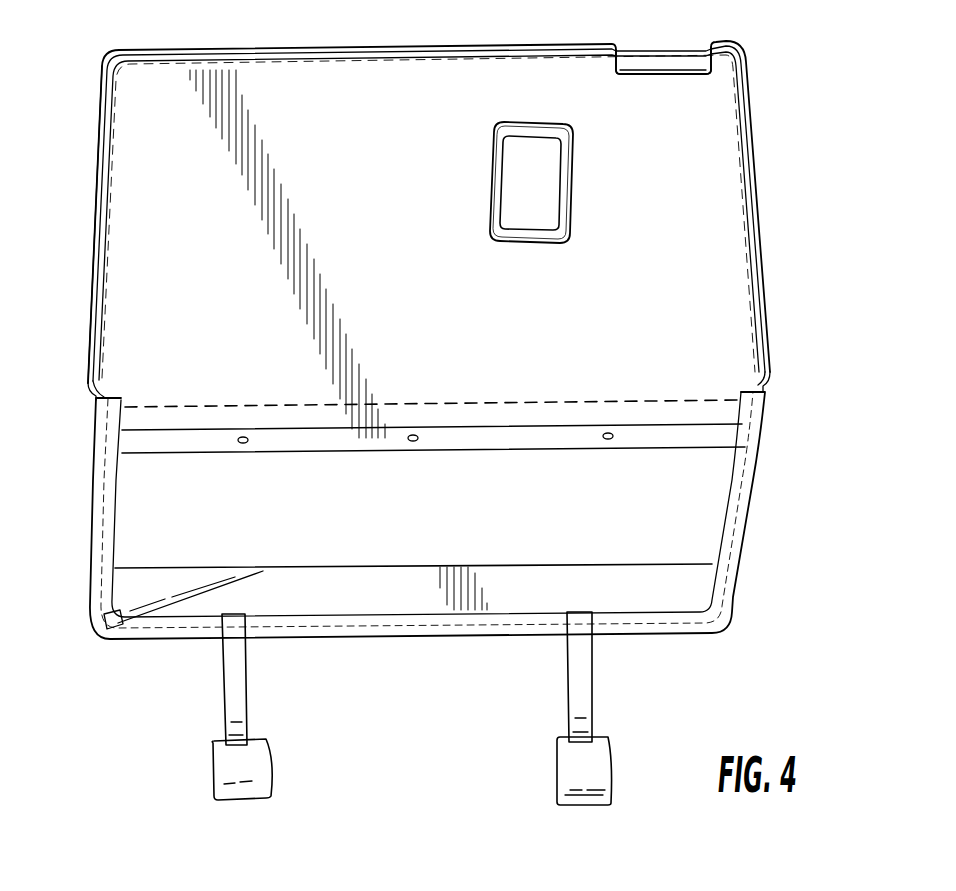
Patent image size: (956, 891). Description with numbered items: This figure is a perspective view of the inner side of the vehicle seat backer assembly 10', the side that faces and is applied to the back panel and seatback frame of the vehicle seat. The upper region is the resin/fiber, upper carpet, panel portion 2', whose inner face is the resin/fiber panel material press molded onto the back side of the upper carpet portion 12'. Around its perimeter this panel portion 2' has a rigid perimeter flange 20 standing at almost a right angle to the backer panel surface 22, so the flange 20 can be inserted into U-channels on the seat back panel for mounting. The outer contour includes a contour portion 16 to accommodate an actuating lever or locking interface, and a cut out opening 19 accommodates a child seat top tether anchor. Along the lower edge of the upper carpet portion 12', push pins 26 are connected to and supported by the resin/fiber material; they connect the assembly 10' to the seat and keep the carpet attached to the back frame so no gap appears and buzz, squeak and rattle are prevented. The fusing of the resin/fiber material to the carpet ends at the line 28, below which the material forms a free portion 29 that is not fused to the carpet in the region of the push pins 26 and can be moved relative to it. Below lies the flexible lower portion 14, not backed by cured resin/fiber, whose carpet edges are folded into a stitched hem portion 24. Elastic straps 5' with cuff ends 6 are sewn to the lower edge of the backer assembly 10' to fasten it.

The resin/fiber, upper carpet, panel portion 2' is at (453, 220).
The elastic straps 5' is at (439, 678).
The cuff ends 6 is at (252, 768).
The vehicle seat backer assembly 10' is at (778, 80).
The upper carpet portion 12' is at (212, 252).
The lower portion 14 is at (683, 502).
The contour portion 16 is at (665, 63).
The cut out opening 19 is at (495, 157).
The perimeter flange 20 is at (748, 202).
The backer panel surface 22 is at (697, 287).
The hem portion 24 is at (690, 555).
The push pins 26 is at (243, 436).
The line 28 is at (652, 398).
The free portion 29 is at (696, 433).